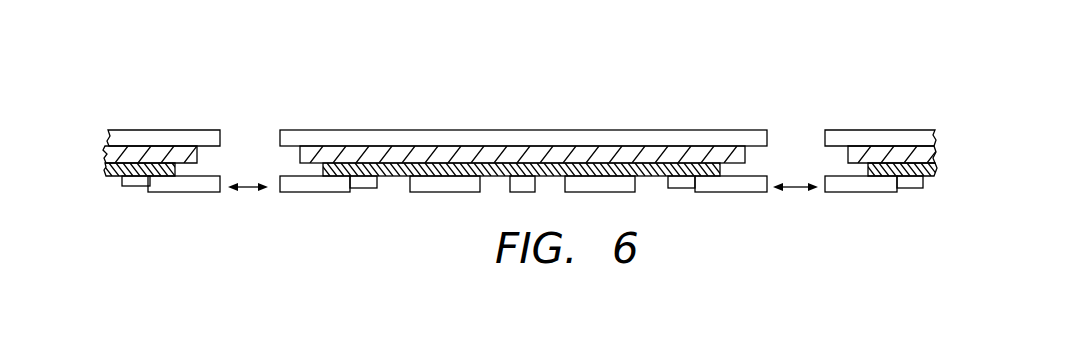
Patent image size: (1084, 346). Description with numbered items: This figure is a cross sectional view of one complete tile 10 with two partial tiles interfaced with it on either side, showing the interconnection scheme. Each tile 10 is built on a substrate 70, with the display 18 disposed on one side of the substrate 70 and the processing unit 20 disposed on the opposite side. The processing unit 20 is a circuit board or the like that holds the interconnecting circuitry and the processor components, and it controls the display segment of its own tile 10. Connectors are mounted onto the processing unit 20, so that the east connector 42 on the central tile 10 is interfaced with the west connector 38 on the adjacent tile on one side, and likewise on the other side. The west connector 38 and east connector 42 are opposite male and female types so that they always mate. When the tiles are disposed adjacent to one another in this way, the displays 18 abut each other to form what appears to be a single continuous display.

The tile 10 is at (181, 125).
The display 18 is at (120, 132).
The processing unit 20 is at (112, 174).
The west connector 38 is at (320, 192).
The east connector 42 is at (183, 192).
The substrate 70 is at (670, 157).